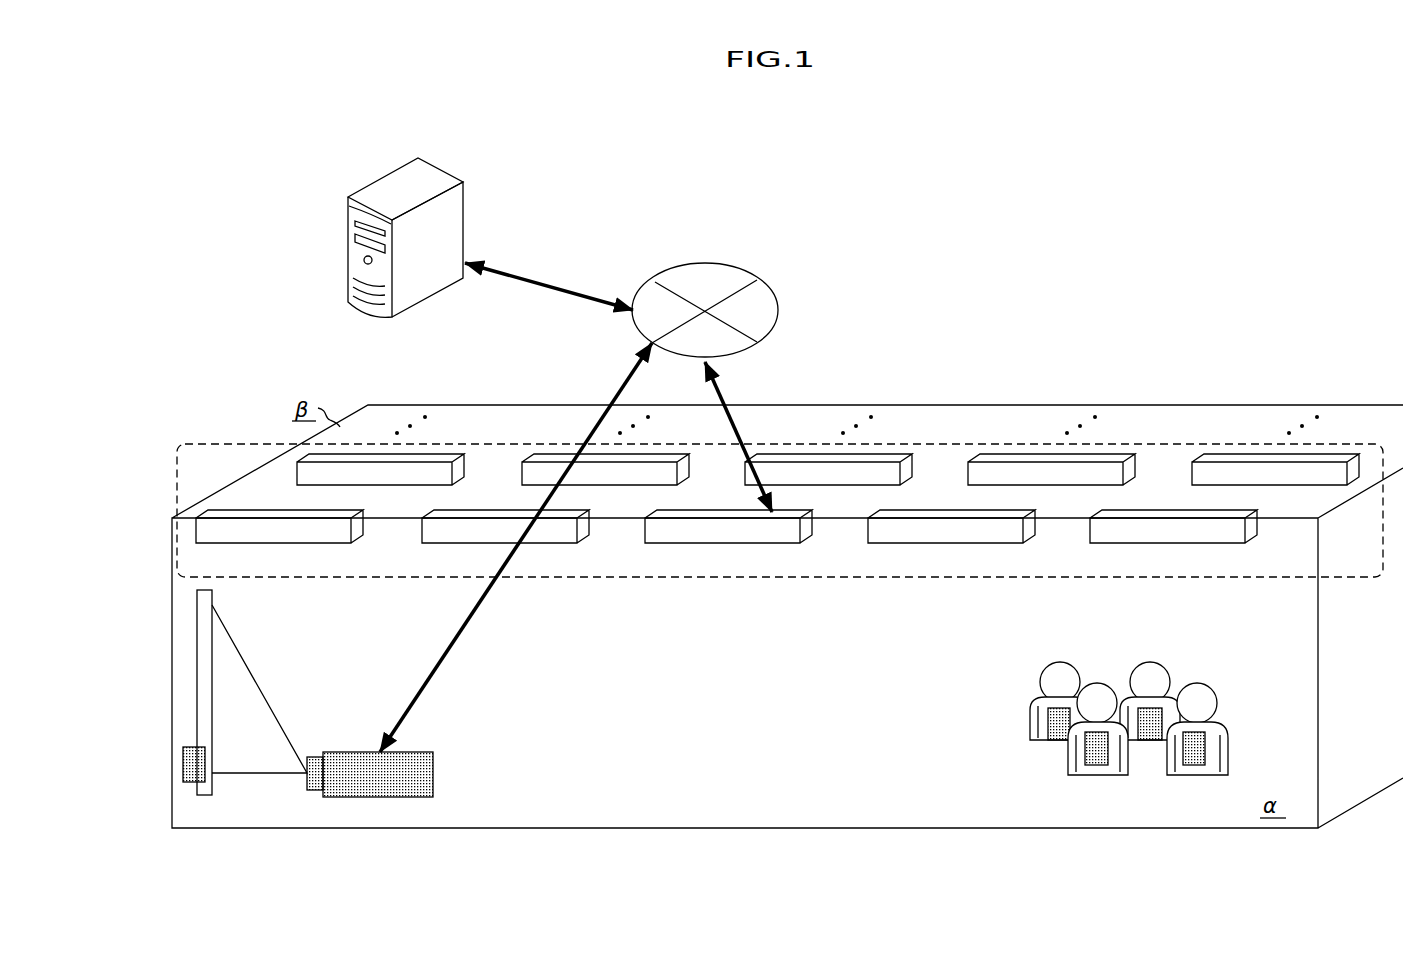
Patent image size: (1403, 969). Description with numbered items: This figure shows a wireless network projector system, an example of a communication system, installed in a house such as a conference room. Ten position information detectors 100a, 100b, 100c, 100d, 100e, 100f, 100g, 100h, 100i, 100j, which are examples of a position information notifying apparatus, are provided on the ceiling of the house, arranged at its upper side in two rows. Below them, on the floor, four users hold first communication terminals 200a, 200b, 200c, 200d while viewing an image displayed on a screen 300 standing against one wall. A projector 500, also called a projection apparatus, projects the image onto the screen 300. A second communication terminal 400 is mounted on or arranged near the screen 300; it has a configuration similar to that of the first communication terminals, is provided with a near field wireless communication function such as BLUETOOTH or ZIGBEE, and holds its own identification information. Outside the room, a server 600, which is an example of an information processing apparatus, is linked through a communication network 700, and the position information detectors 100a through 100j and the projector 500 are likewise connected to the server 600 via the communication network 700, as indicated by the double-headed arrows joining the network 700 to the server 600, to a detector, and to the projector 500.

The position information detector 100a is at (330, 543).
The position information detector 100b is at (555, 543).
The position information detector 100c is at (777, 543).
The position information detector 100d is at (1000, 543).
The position information detector 100e is at (1223, 543).
The position information detector 100f is at (348, 485).
The position information detector 100g is at (573, 485).
The position information detector 100h is at (798, 485).
The position information detector 100i is at (1027, 485).
The position information detector 100j is at (1255, 485).
The first communication terminal 200a is at (1097, 765).
The first communication terminal 200b is at (1195, 765).
The first communication terminal 200c is at (1055, 740).
The first communication terminal 200d is at (1150, 740).
The screen 300 is at (197, 632).
The second communication terminal 400 is at (183, 765).
The projector 500 is at (415, 756).
The server 600 is at (450, 175).
The communication network 700 is at (735, 265).